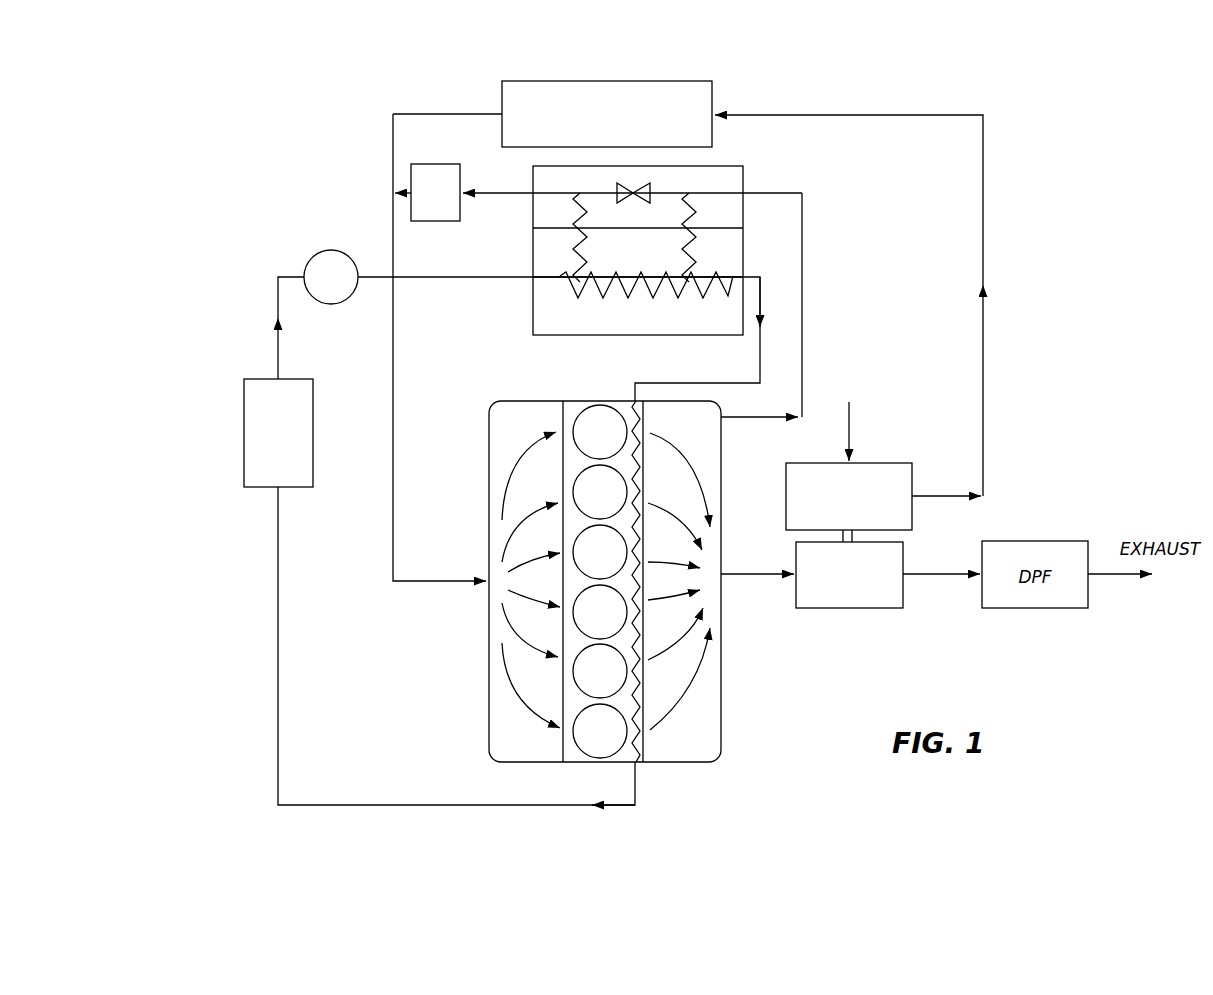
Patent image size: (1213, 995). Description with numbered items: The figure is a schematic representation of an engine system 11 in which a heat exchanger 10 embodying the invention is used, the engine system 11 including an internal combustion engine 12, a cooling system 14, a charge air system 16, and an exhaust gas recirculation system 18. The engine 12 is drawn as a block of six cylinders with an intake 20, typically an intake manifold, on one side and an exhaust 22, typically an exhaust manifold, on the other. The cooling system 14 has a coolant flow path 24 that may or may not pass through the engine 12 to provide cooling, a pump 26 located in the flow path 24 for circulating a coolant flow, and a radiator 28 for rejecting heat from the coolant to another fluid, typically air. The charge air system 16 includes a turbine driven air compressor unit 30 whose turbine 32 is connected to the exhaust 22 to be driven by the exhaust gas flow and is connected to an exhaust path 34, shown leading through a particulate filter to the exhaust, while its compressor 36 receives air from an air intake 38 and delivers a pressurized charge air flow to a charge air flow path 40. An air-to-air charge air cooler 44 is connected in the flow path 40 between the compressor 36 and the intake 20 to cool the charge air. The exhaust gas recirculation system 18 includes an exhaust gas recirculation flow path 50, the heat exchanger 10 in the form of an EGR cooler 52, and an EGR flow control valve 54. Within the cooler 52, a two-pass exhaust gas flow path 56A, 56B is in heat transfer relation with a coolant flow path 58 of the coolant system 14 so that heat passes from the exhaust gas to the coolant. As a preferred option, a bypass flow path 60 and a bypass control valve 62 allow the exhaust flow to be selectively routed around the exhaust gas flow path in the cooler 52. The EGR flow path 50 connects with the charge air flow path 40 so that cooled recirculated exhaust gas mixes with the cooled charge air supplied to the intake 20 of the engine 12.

The heat exchanger 10 is at (746, 240).
The engine system 11 is at (262, 167).
The internal combustion engine 12 is at (456, 648).
The cooling system 14 is at (223, 330).
The charge air system 16 is at (1073, 208).
The exhaust gas recirculation system 18 is at (819, 318).
The intake 20 is at (488, 462).
The exhaust 22 is at (722, 688).
The coolant flow path 24 is at (377, 272).
The pump 26 is at (331, 277).
The radiator 28 is at (278, 433).
The turbine driven air compressor unit 30 is at (772, 525).
The turbine 32 is at (849, 575).
The exhaust path 34 is at (930, 577).
The compressor 36 is at (849, 496).
The air intake 38 is at (849, 430).
The charge air flow path 40 is at (979, 228).
The air-to-air charge air cooler 44 is at (681, 79).
The exhaust gas recirculation flow path 50 is at (805, 208).
The EGR cooler 52 is at (746, 268).
The EGR flow control valve 54 is at (423, 164).
The exhaust gas flow path first pass 56A is at (693, 247).
The exhaust gas flow path second pass 56B is at (577, 243).
The coolant flow path 58 is at (617, 283).
The bypass flow path 60 is at (632, 191).
The bypass control valve 62 is at (643, 188).